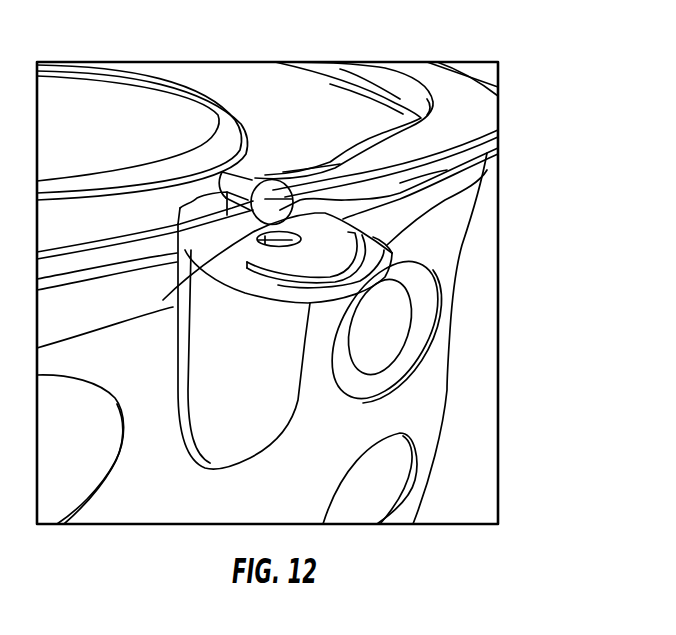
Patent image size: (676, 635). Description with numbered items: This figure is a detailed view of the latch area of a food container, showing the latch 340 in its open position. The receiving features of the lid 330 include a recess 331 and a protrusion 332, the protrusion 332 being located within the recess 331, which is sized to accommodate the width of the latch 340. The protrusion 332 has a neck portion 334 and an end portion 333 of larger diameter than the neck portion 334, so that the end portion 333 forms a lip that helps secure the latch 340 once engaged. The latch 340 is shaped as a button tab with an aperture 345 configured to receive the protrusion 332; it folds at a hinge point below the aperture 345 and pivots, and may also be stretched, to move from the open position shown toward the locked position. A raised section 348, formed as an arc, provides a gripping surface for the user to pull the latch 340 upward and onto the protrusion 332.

The lid 330 is at (470, 101).
The recess 331 is at (198, 206).
The protrusion 332 is at (236, 169).
The end portion 333 is at (317, 185).
The neck portion 334 is at (255, 182).
The latch 340 is at (370, 267).
The aperture 345 is at (177, 291).
The raised section 348 is at (378, 228).